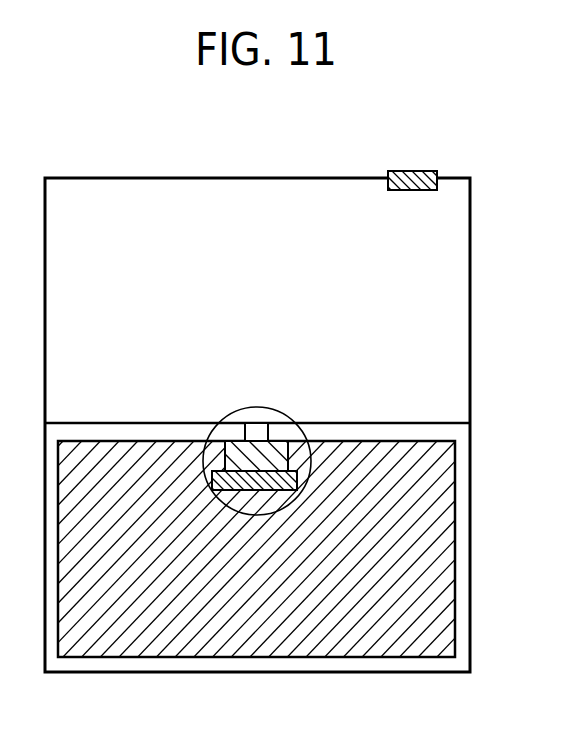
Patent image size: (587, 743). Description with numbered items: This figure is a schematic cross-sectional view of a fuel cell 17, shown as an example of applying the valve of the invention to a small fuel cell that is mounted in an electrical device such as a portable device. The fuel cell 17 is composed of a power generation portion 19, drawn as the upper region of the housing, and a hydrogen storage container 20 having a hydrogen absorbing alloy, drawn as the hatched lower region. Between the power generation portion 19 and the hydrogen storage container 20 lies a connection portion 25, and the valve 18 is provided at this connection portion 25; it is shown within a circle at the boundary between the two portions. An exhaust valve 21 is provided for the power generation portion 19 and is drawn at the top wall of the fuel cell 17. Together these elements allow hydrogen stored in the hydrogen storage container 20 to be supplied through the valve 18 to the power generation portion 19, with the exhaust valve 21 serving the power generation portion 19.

The fuel cell 17 is at (472, 347).
The valve 18 is at (253, 460).
The power generation portion 19 is at (445, 263).
The hydrogen storage container 20 is at (430, 541).
The exhaust valve 21 is at (411, 173).
The connection portion 25 is at (450, 435).